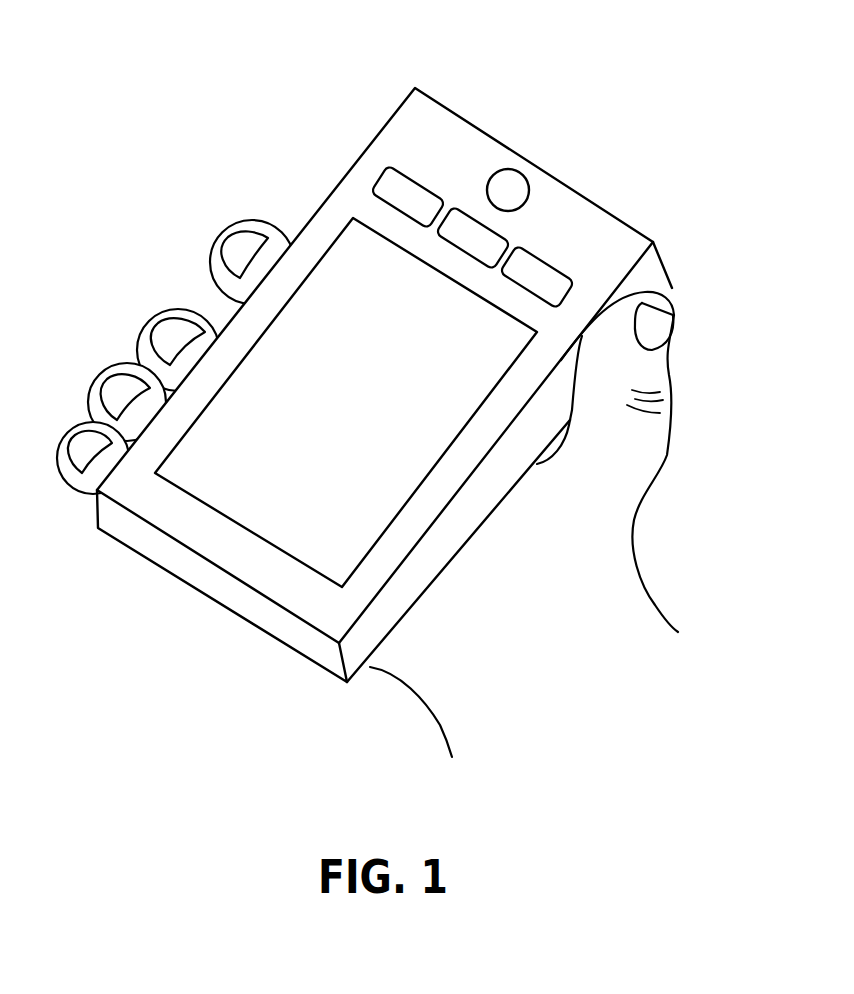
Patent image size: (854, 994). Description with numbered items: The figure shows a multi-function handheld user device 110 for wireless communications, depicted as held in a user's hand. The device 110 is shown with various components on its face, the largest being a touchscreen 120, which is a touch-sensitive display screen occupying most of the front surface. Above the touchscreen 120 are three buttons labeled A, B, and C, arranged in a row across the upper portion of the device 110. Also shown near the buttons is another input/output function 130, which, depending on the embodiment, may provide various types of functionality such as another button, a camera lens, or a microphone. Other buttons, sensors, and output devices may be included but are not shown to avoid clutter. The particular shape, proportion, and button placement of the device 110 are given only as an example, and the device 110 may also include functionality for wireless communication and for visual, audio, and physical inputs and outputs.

The multi-function handheld user device 110 is at (405, 137).
The touchscreen 120 is at (257, 463).
The input/output function 130 is at (530, 182).